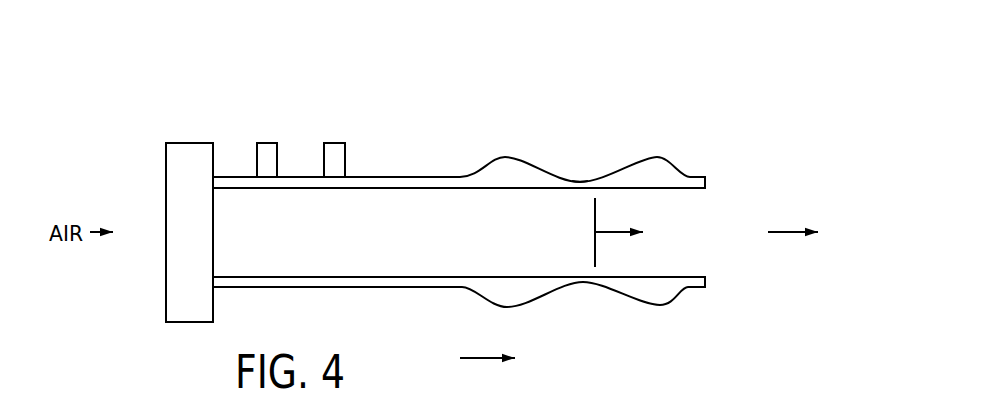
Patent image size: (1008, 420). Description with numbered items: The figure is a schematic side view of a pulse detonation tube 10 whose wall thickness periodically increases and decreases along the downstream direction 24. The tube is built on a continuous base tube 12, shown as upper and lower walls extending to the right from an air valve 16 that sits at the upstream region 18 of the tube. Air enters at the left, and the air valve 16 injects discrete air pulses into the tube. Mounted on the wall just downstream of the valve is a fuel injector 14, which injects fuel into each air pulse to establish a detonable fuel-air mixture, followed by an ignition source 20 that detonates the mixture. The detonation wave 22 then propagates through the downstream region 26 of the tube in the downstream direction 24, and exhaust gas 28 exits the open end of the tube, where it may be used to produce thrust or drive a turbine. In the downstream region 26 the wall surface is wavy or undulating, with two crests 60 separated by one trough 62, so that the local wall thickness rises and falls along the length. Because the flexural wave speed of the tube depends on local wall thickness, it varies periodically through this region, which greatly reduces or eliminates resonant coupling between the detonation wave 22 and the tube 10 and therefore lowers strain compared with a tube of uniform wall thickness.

The pulse detonation tube 10 is at (439, 86).
The continuous base tube 12 is at (400, 177).
The fuel injector 14 is at (262, 143).
The air valve 16 is at (188, 142).
The upstream region 18 is at (247, 108).
The ignition source 20 is at (330, 143).
The detonation wave 22 is at (596, 217).
The downstream direction 24 is at (468, 358).
The downstream region 26 is at (617, 118).
The exhaust gas 28 is at (793, 233).
The crest 60 is at (505, 157).
The trough 62 is at (579, 182).